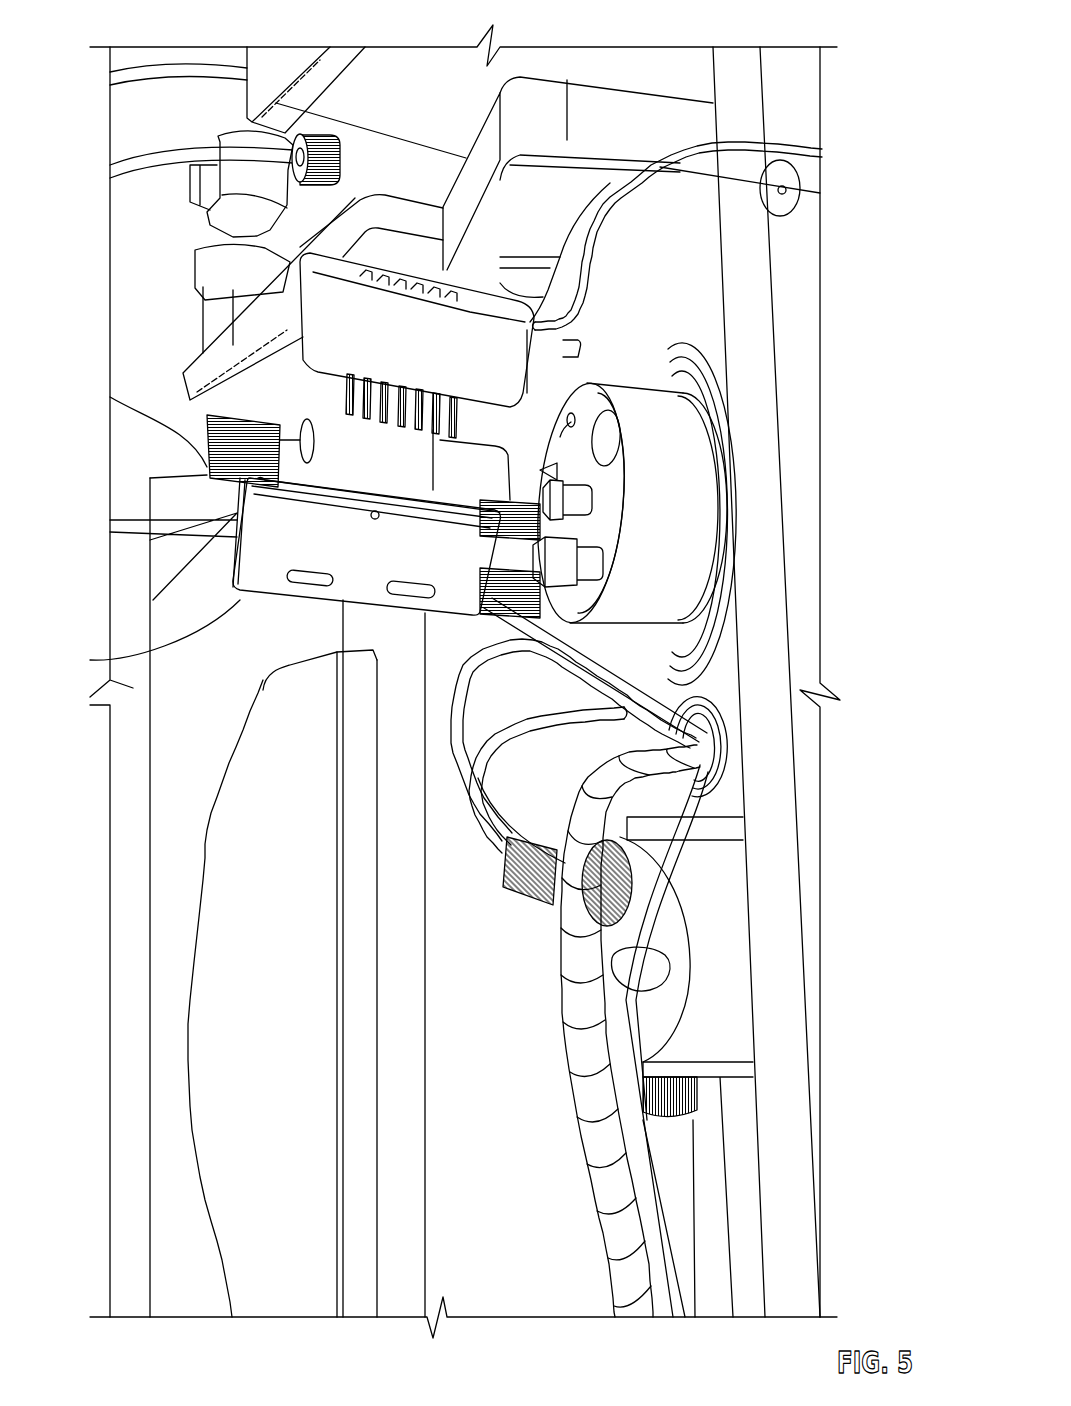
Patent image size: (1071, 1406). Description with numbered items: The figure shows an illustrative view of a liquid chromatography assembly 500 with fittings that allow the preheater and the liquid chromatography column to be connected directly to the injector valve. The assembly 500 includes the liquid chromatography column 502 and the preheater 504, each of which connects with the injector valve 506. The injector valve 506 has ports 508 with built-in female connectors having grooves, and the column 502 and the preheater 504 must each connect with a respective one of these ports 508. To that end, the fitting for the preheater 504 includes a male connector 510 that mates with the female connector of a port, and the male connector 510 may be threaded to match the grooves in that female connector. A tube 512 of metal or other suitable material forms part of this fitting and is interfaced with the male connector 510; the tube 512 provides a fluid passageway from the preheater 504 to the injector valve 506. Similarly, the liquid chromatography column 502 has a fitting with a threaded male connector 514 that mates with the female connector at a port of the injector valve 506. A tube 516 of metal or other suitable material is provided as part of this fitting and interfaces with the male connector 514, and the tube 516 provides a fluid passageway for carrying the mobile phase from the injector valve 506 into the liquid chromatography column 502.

The liquid chromatography assembly 500 is at (850, 36).
The liquid chromatography column 502 is at (212, 470).
The preheater 504 is at (270, 550).
The injector valve 506 is at (687, 547).
The ports 508 is at (617, 403).
The male connector 510 is at (620, 627).
The tube 512 is at (630, 657).
The threaded male connector 514 is at (563, 507).
The tube 516 is at (613, 462).